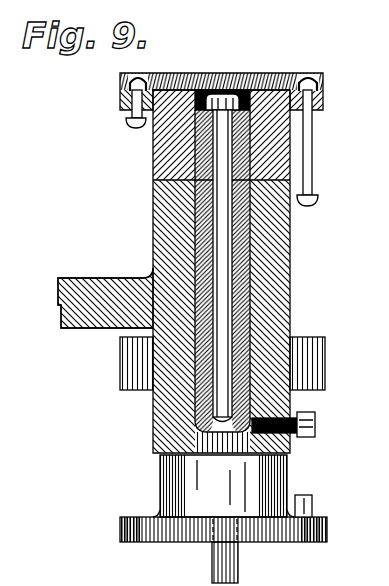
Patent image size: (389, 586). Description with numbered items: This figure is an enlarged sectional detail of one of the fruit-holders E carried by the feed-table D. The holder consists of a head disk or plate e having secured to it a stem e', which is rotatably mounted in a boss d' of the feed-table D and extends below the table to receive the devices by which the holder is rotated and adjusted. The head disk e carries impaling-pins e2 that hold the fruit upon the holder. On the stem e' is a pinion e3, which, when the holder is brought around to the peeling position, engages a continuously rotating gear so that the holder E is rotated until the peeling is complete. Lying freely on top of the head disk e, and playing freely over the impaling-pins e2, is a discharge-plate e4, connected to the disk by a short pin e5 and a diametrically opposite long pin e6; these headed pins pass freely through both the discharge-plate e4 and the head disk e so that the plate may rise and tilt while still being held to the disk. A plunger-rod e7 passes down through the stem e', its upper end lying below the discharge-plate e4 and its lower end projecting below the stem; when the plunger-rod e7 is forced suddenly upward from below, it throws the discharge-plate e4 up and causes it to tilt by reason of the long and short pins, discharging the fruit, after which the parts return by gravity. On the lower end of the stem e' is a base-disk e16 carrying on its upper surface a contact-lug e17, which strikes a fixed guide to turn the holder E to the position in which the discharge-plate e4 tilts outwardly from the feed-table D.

The feed-table D is at (58, 279).
The boss d' is at (201, 271).
The fruit-holder E is at (249, 135).
The head disk e is at (284, 95).
The stem e' is at (217, 280).
The impaling-pins e2 is at (165, 61).
The pinion e3 is at (318, 373).
The discharge-plate e4 is at (234, 73).
The short pin e5 is at (128, 124).
The long pin e6 is at (313, 131).
The plunger-rod e7 is at (243, 285).
The base-disk e16 is at (328, 531).
The contact-lug e17 is at (313, 503).